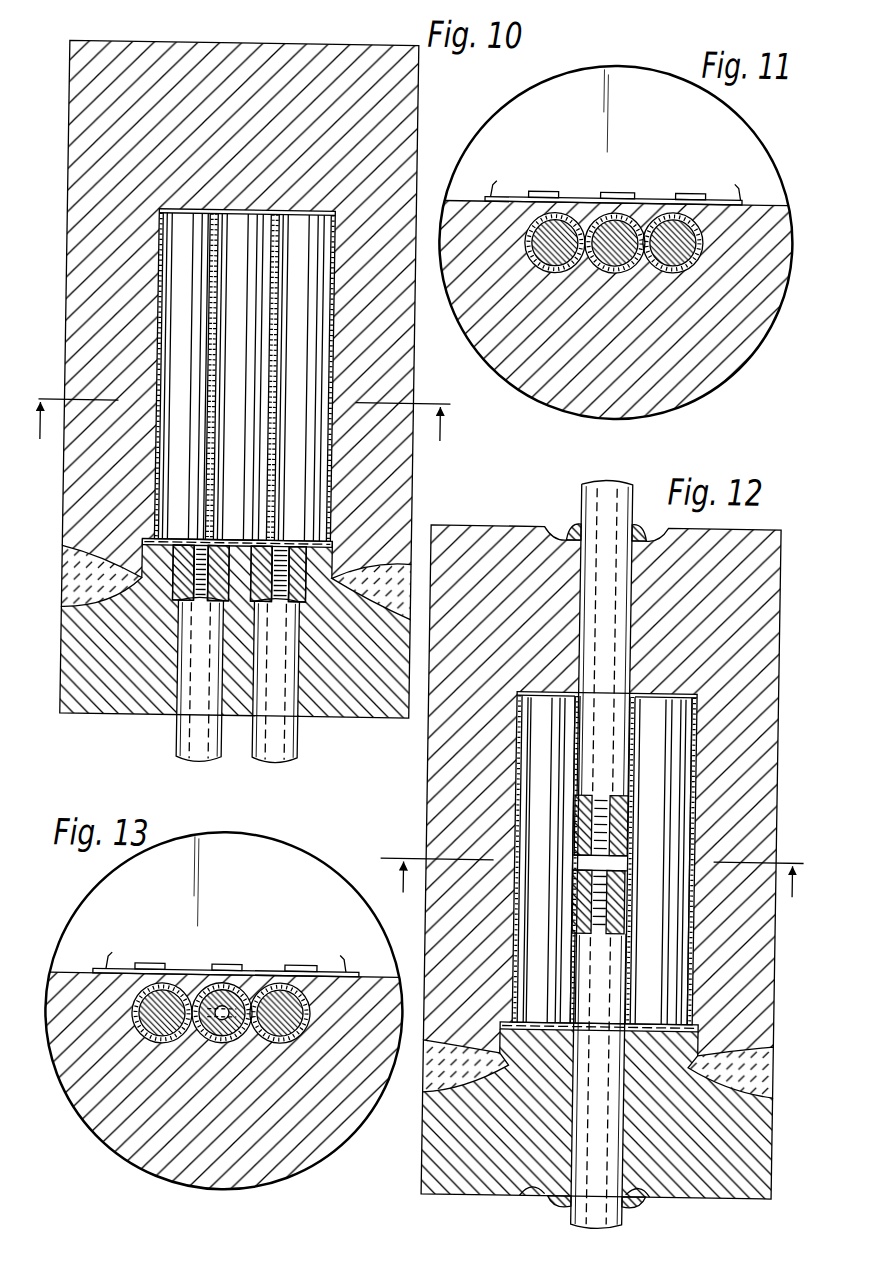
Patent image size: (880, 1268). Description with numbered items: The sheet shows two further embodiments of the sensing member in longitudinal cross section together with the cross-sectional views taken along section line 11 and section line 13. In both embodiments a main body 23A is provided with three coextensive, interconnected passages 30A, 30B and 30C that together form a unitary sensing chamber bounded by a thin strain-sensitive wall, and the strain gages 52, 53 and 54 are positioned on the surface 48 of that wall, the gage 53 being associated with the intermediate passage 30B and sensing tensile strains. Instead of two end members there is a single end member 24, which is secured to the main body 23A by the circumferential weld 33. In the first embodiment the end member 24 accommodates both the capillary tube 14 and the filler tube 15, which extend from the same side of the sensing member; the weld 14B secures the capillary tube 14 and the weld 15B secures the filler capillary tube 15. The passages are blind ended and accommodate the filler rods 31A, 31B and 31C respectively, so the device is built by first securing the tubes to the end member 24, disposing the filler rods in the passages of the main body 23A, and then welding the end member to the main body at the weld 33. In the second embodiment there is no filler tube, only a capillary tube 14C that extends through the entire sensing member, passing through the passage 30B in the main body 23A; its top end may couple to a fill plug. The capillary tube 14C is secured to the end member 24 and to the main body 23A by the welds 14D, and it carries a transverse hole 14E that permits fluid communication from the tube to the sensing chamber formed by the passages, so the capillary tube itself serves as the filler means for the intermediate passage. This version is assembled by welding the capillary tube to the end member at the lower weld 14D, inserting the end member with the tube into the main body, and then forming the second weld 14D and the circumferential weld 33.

In FIG. 10, the section line 11— 11 is at (239, 439).
In FIG. 12, the section line 13— 13 is at (592, 897).
In FIG. 10, the capillary tube 14 is at (178, 744).
In FIG. 10, the weld 14B is at (176, 565).
In FIG. 12, the capillary tube 14C is at (578, 491).
In FIG. 13, the capillary tube 14C is at (230, 1047).
In FIG. 12, the weld 14D is at (566, 524).
In FIG. 12, the transverse hole 14E is at (578, 856).
In FIG. 13, the transverse hole 14E is at (232, 1012).
In FIG. 10, the filler tube 15 is at (299, 748).
In FIG. 10, the weld 15B is at (305, 719).
In FIG. 10, the main body 23A is at (415, 92).
In FIG. 11, the main body 23A is at (758, 342).
In FIG. 12, the main body 23A is at (494, 522).
In FIG. 10, the end member 24 is at (99, 721).
In FIG. 12, the end member 24 is at (418, 1177).
In FIG. 10, the passage 30A is at (153, 225).
In FIG. 11, the passage 30A is at (534, 267).
In FIG. 12, the passage 30A is at (518, 738).
In FIG. 13, the passage 30A is at (148, 1045).
In FIG. 10, the passage 30B is at (208, 225).
In FIG. 11, the passage 30B is at (579, 263).
In FIG. 12, the passage 30B is at (577, 781).
In FIG. 13, the passage 30B is at (198, 1047).
In FIG. 10, the passage 30C is at (331, 245).
In FIG. 11, the passage 30C is at (681, 266).
In FIG. 12, the passage 30C is at (692, 735).
In FIG. 13, the passage 30C is at (310, 1034).
In FIG. 10, the filler rod 31A is at (184, 225).
In FIG. 11, the filler rod 31A is at (549, 264).
In FIG. 12, the filler rod 31A is at (553, 768).
In FIG. 13, the filler rod 31A is at (150, 1035).
In FIG. 10, the filler rod 31B is at (240, 225).
In FIG. 11, the filler rod 31B is at (612, 263).
In FIG. 10, the filler rod 31C is at (296, 225).
In FIG. 11, the filler rod 31C is at (669, 262).
In FIG. 12, the filler rod 31C is at (655, 815).
In FIG. 13, the filler rod 31C is at (287, 1047).
In FIG. 10, the weld 33 is at (60, 566).
In FIG. 12, the weld 33 is at (429, 1086).
In FIG. 11, the surface 48 is at (748, 198).
In FIG. 13, the surface 48 is at (77, 976).
In FIG. 11, the strain gage 52 is at (540, 188).
In FIG. 13, the strain gage 52 is at (150, 965).
In FIG. 11, the strain gage 53 is at (613, 188).
In FIG. 13, the strain gage 53 is at (230, 965).
In FIG. 11, the strain gage 54 is at (684, 188).
In FIG. 13, the strain gage 54 is at (303, 965).